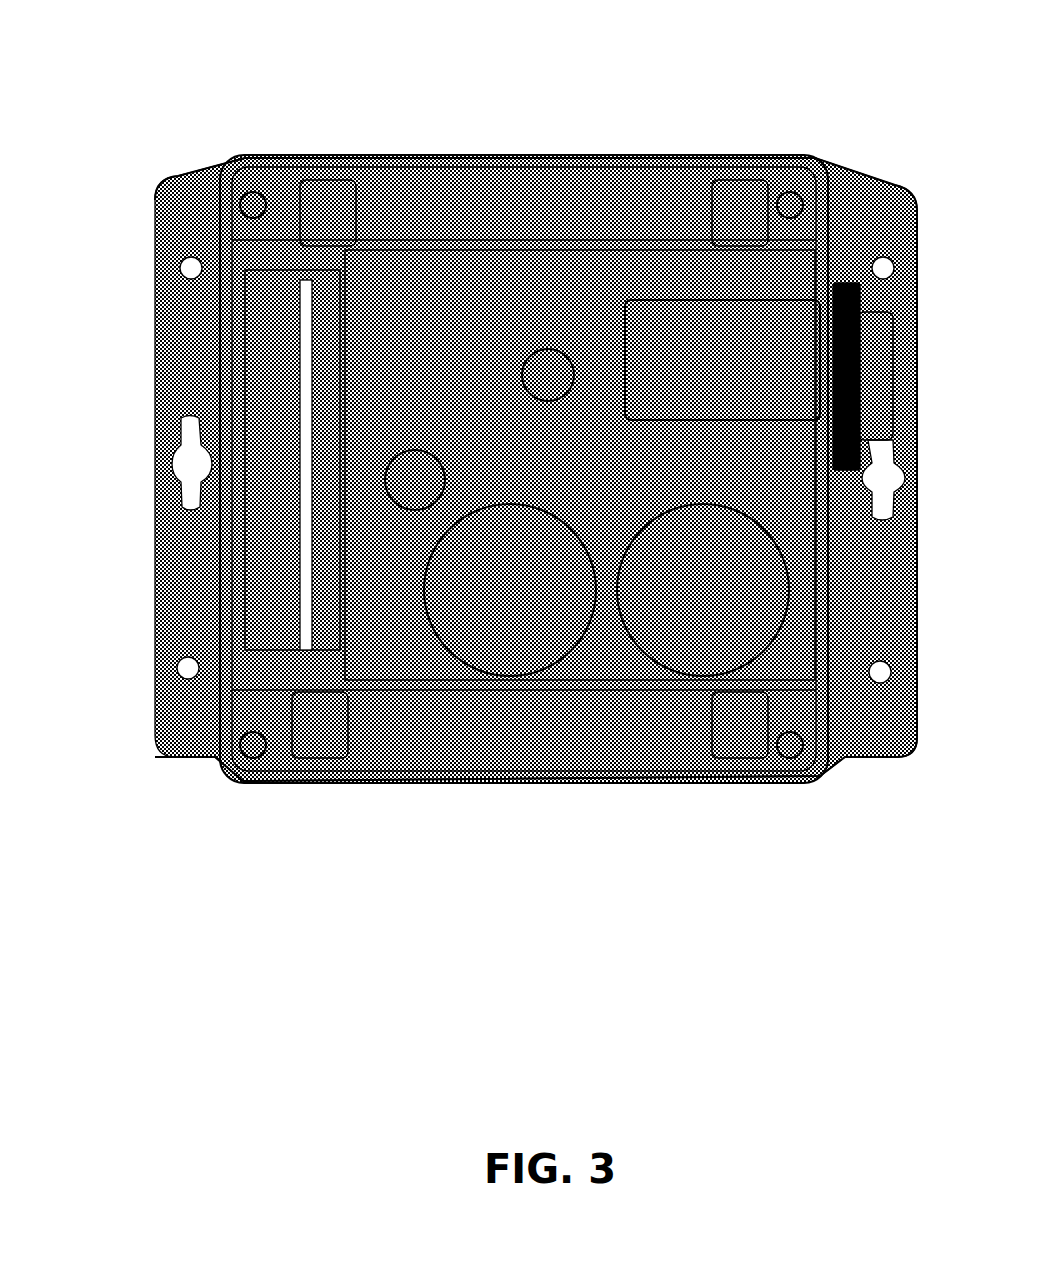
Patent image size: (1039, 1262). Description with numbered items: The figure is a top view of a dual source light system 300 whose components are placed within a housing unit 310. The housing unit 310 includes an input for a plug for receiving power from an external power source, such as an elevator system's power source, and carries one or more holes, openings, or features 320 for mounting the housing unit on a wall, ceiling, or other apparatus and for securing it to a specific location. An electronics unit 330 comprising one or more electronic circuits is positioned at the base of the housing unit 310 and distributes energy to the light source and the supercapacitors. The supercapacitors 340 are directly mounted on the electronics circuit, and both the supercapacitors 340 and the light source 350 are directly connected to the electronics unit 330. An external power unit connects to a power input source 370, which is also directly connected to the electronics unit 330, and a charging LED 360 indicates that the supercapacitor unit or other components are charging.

The controller assembly 300 is at (475, 485).
The housing unit 310 is at (393, 147).
The features for mounting 320 is at (152, 578).
The electronics unit 330 is at (371, 780).
The supercapacitors 340 is at (467, 780).
The light source 350 is at (188, 498).
The charging LED 360 is at (243, 158).
The power input source 370 is at (675, 157).